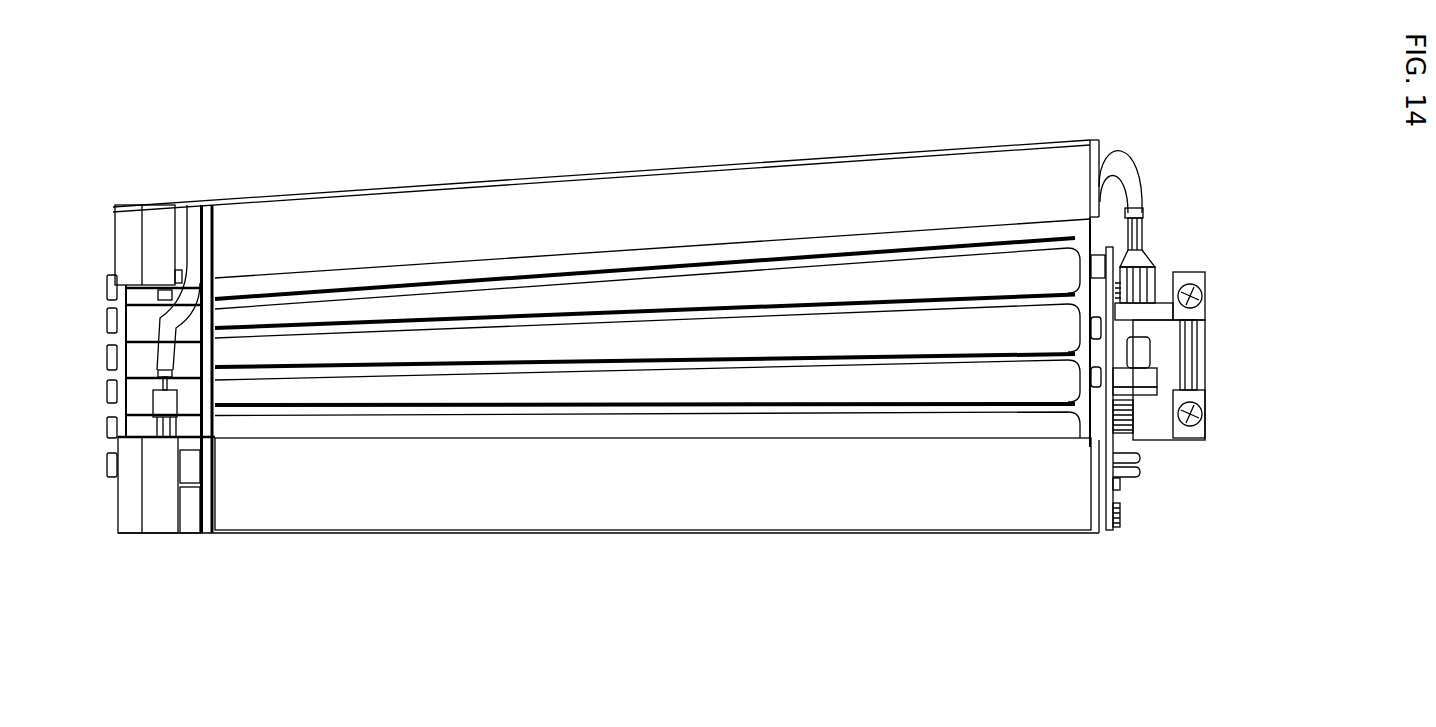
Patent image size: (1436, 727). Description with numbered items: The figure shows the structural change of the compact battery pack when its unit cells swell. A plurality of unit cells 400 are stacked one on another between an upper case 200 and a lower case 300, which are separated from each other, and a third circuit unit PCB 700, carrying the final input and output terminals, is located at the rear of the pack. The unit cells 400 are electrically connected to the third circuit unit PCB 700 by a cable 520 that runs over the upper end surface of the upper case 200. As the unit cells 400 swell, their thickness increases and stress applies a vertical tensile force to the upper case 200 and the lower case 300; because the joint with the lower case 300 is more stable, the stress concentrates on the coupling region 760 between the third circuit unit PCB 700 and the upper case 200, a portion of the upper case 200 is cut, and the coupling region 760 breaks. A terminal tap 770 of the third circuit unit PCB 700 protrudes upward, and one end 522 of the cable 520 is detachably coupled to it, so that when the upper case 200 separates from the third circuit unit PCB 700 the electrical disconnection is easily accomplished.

The upper case 200 is at (517, 203).
The lower case 300 is at (562, 515).
The unit cells 400 is at (378, 310).
The cable 520 is at (1130, 167).
The end of the cable 522 is at (1157, 263).
The third circuit unit PCB 700 is at (1181, 348).
The coupling region 760 is at (1070, 252).
The terminal tap 770 is at (1143, 355).